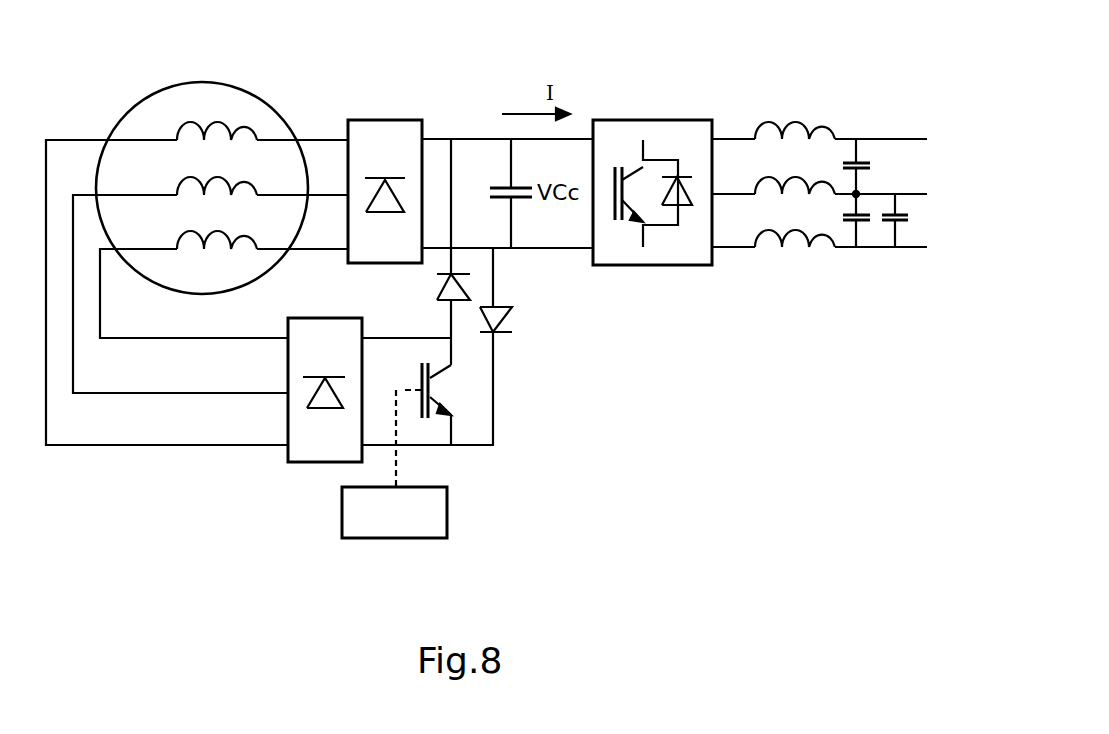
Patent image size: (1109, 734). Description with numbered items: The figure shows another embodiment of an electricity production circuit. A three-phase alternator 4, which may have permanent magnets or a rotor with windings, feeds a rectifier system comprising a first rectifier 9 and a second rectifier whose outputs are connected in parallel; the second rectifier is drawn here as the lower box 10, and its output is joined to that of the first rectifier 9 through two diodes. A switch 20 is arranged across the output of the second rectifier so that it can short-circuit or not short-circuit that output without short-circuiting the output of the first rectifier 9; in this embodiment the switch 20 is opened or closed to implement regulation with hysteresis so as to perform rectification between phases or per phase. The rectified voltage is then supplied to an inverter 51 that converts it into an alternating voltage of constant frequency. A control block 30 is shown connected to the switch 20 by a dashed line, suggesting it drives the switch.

The three-phase alternator 4 is at (198, 82).
The first rectifier 9 is at (390, 132).
The second rectifier 10 is at (323, 333).
The inverter 51 is at (655, 128).
The switch 20 is at (437, 388).
The control unit 30 is at (435, 508).